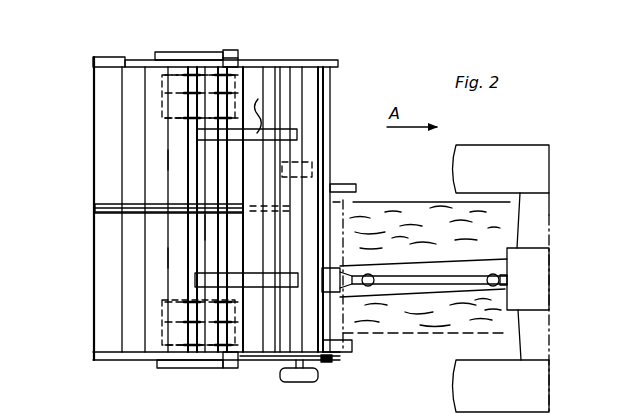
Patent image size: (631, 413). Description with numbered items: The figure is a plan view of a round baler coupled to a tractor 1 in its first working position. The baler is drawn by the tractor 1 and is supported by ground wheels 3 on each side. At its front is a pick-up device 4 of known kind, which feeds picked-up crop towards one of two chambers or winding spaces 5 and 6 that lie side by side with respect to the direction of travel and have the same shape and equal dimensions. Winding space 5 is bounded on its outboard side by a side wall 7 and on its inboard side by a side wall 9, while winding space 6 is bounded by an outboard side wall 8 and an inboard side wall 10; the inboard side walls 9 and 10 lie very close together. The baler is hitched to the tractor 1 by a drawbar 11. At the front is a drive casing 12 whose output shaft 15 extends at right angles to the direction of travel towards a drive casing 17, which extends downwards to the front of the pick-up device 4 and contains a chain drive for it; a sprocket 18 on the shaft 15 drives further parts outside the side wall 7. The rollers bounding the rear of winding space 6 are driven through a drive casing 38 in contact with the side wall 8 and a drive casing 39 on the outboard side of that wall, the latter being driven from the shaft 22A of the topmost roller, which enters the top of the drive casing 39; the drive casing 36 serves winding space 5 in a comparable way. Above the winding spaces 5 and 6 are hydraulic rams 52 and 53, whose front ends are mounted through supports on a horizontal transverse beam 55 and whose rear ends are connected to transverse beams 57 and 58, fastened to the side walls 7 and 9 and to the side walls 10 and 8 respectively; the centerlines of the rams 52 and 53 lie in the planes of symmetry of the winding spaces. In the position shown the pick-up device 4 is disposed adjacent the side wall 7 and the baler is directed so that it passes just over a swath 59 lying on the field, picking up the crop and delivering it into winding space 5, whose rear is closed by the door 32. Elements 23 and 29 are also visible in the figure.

The tractor 1 is at (475, 386).
The ground wheels 3 is at (160, 108).
The pick-up device 4 is at (346, 209).
The winding space 5 is at (163, 266).
The winding space 6 is at (162, 168).
The side wall 7 is at (95, 352).
The side wall 8 is at (109, 58).
The side wall 9 is at (95, 214).
The side wall 10 is at (98, 205).
The drawbar 11 is at (406, 273).
The drive casing 12 is at (335, 270).
The output shaft 15 is at (333, 96).
The drive casing 17 is at (354, 350).
The sprocket 18 is at (333, 364).
The shaft 22A is at (228, 85).
The base plate 23 is at (176, 368).
The bottom beam 29 is at (258, 362).
The door 32 is at (88, 108).
The drive casing 36 is at (108, 362).
The drive casing 38 is at (131, 60).
The drive casing 39 is at (200, 52).
The hydraulic ram 52 is at (255, 273).
The hydraulic ram 53 is at (260, 115).
The transverse beam 55 is at (287, 160).
The transverse beam 57 is at (200, 227).
The transverse beam 58 is at (197, 135).
The swath 59 is at (440, 322).